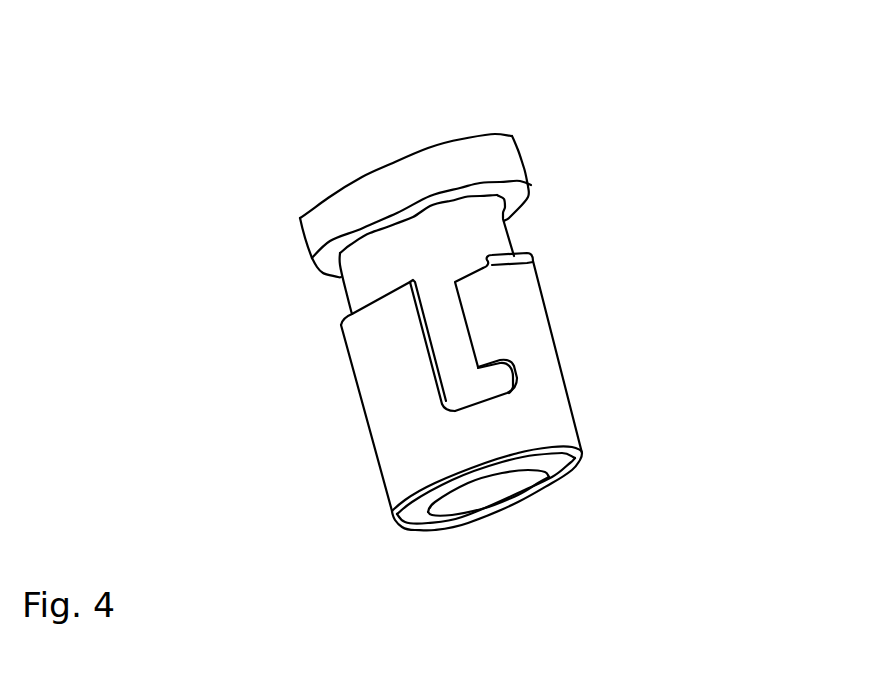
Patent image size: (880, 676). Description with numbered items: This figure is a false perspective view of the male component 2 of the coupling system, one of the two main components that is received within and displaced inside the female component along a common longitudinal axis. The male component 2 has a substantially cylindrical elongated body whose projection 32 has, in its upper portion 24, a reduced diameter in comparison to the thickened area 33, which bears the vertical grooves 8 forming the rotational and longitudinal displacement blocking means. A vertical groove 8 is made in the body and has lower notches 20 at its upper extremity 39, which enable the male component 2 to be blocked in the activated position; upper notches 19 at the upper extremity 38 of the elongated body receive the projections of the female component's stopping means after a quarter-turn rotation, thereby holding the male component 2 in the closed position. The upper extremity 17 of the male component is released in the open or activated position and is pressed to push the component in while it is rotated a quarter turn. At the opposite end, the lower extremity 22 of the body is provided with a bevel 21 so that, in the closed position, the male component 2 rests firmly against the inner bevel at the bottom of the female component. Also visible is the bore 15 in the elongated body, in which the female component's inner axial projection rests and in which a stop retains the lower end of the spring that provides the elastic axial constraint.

The male component 2 is at (512, 152).
The vertical groove 8 is at (453, 340).
The bore 15 is at (498, 489).
The upper extremity 17 is at (350, 178).
The upper notch 19 is at (535, 262).
The lower notch 20 is at (514, 391).
The bevel 21 is at (401, 502).
The lower extremity 22 is at (413, 523).
The upper portion 24 is at (351, 313).
The projection 32 is at (467, 227).
The thickened area 33 is at (390, 403).
The upper extremity 38 is at (466, 278).
The upper extremity 39 is at (490, 362).